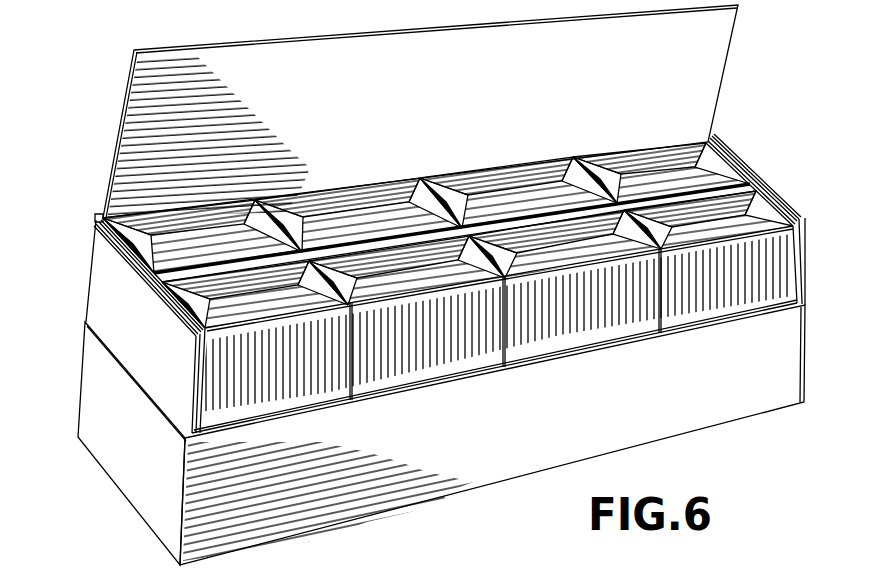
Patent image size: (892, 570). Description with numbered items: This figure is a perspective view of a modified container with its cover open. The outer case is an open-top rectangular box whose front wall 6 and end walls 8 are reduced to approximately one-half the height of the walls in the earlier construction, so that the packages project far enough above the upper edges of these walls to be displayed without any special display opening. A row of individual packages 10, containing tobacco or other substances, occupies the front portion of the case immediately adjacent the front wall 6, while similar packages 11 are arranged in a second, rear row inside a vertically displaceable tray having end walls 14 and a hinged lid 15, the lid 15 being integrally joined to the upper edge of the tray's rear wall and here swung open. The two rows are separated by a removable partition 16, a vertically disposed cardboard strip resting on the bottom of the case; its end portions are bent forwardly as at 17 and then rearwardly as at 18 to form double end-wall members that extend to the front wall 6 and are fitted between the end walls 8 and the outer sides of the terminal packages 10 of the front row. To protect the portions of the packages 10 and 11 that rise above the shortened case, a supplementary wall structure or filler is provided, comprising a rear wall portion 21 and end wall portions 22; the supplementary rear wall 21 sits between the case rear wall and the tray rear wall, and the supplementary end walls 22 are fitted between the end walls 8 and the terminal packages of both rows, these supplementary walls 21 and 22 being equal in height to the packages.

The front wall 6 is at (487, 473).
The end walls 8 is at (127, 477).
The individual packages 10 is at (340, 393).
The packages 11 is at (296, 198).
The end walls 14 is at (752, 150).
The hinged lid 15 is at (420, 111).
The removable partition 16 is at (402, 248).
The forwardly bent end portion 17 is at (779, 216).
The outer end wall ply 18 is at (183, 321).
The supplementary rear wall 21 is at (100, 217).
The supplementary end walls 22 is at (103, 303).